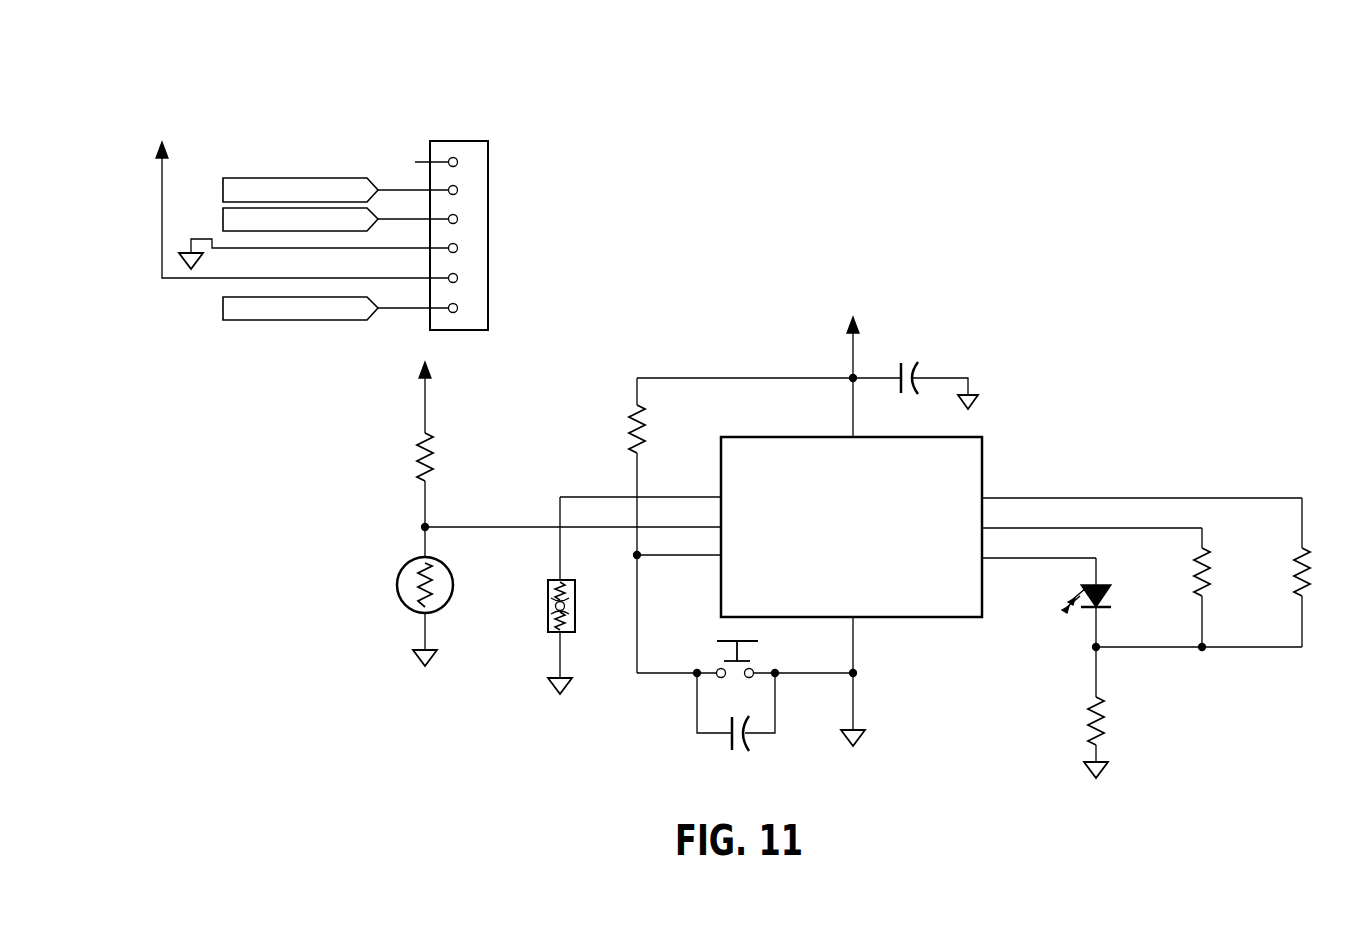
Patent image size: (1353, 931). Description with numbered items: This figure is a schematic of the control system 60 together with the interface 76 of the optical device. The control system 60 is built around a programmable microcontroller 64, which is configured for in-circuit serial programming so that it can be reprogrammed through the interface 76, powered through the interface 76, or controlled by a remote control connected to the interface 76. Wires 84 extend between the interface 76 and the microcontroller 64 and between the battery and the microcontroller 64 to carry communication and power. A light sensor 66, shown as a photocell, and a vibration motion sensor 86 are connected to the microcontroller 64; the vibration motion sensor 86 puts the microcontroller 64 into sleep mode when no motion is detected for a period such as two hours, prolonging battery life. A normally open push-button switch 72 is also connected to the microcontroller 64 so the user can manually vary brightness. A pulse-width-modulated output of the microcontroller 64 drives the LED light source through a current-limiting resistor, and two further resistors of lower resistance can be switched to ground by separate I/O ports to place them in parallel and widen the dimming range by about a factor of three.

The interface 76 is at (369, 180).
The control system 60 is at (819, 495).
The microcontroller 64 is at (888, 523).
The wires 84 is at (863, 525).
The light sensor 66 is at (399, 514).
The vibration motion sensor 86 is at (515, 599).
The switch 72 is at (694, 701).